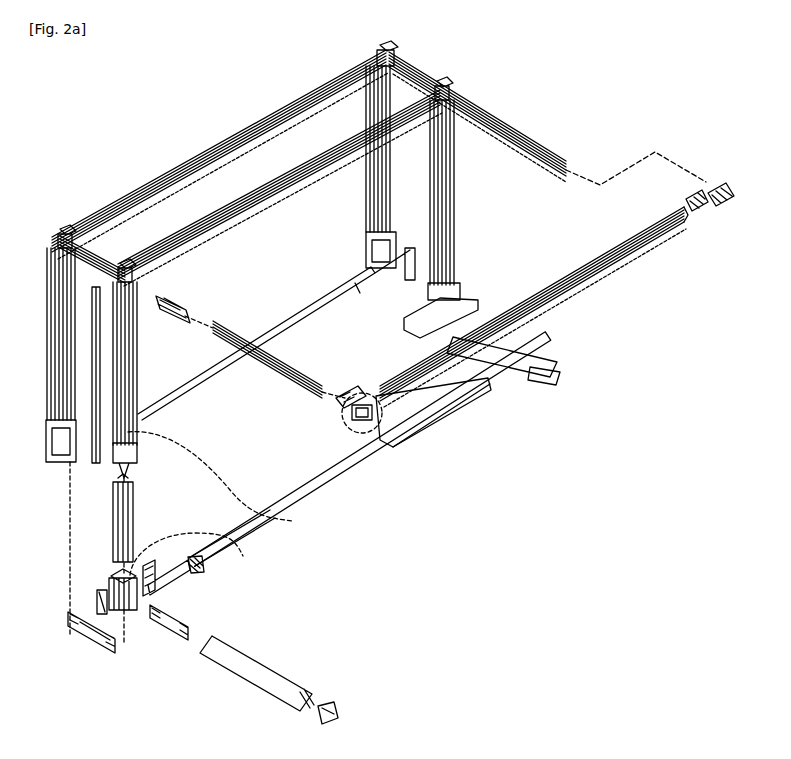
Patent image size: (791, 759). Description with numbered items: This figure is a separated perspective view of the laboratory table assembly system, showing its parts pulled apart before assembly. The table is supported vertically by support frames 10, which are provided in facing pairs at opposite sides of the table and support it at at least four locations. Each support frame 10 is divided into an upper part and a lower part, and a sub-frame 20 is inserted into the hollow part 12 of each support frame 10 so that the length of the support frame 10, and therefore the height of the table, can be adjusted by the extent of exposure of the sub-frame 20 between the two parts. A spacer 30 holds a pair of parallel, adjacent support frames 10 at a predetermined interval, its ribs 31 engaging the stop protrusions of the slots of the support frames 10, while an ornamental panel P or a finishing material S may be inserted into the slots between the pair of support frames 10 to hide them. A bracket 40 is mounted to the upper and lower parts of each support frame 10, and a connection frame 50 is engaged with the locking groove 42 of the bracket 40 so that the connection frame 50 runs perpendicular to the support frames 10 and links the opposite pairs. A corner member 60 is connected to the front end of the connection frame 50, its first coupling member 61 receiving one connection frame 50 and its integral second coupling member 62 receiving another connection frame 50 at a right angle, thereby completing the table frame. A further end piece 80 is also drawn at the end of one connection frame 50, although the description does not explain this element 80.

The connection frame 50 is at (230, 137).
The ornamental panel P is at (80, 293).
The finishing material S is at (90, 327).
The support frame 10 is at (220, 483).
The bracket 40 is at (183, 296).
The locking groove 42 is at (190, 626).
The sub-frame 20 is at (105, 512).
The hollow part 12 is at (108, 583).
The spacer 30 is at (83, 640).
The rib 31 is at (110, 660).
The corner member 60 is at (397, 420).
The first coupling member 61 is at (377, 460).
The second coupling member 62 is at (444, 423).
The end connector 80 is at (713, 212).